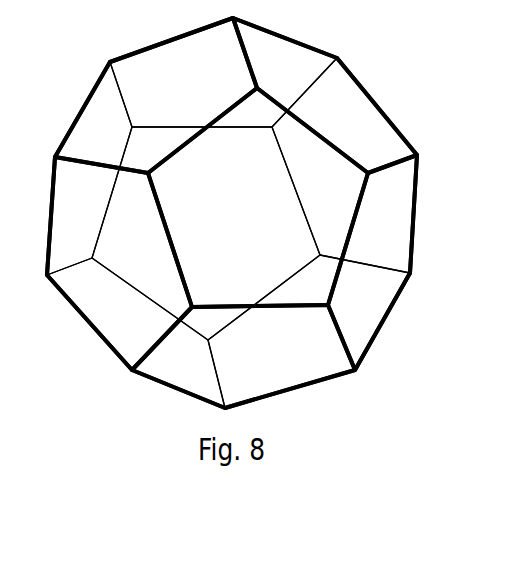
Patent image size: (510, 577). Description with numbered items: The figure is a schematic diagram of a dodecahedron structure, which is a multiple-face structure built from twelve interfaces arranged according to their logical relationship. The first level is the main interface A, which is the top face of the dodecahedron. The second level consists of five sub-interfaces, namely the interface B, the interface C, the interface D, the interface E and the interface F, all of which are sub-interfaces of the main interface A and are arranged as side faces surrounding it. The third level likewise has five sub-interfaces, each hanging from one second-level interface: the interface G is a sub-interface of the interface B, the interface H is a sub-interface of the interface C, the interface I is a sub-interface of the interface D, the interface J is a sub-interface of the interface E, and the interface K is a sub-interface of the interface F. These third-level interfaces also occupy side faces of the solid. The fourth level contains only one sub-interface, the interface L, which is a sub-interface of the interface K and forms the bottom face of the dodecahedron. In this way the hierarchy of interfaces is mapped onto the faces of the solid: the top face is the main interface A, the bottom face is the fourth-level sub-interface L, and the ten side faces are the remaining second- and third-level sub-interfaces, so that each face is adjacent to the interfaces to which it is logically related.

The main interface A is at (258, 197).
The interface B is at (119, 263).
The interface C is at (243, 356).
The interface D is at (372, 262).
The interface E is at (325, 95).
The interface F is at (156, 95).
The interface G is at (89, 168).
The interface H is at (136, 333).
The interface I is at (309, 331).
The interface J is at (344, 165).
The interface K is at (223, 72).
The interface L is at (206, 233).